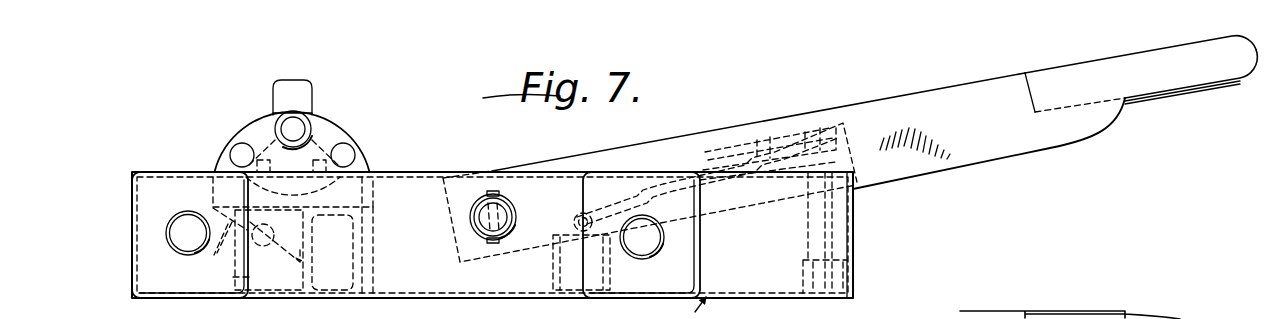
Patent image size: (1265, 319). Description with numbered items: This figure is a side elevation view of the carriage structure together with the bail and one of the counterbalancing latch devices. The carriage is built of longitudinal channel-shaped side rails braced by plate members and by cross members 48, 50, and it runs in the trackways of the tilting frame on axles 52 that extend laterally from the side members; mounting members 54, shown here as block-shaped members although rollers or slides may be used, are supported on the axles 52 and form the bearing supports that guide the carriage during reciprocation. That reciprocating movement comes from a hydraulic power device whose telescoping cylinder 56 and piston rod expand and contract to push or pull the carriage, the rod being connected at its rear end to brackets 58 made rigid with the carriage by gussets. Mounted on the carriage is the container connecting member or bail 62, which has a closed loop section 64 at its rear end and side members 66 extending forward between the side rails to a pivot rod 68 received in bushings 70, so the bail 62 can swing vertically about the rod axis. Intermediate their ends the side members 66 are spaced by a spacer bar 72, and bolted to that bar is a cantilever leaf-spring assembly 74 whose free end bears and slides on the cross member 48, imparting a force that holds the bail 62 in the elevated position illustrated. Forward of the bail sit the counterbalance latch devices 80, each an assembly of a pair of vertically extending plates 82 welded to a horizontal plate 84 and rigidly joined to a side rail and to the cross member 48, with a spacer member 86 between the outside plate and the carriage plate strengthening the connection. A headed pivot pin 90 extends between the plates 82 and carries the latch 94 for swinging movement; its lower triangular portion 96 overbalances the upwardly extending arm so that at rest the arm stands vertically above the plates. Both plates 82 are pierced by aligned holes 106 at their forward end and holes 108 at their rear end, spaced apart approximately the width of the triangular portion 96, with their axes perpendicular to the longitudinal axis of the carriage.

The cross member 48 is at (788, 283).
The cross member 50 is at (277, 254).
The axle 52 is at (184, 216).
The mounting member 54 is at (140, 253).
The telescoping cylinder 56 is at (853, 230).
The bracket 58 is at (233, 277).
The bail 62 is at (1050, 152).
The loop section 64 is at (1238, 82).
The bail side member 66 is at (973, 150).
The pivot rod 68 is at (488, 220).
The bushing 70 is at (470, 212).
The spacer bar 72 is at (846, 122).
The leaf-spring assembly 74 is at (727, 190).
The counterbalance latch device 80 is at (376, 129).
The vertically extending plate 82 is at (347, 133).
The horizontal plate 84 is at (371, 209).
The spacer member 86 is at (220, 247).
The pivot pin 90 is at (296, 127).
The latch 94 is at (272, 102).
The triangular portion 96 is at (285, 79).
The hole 106 is at (233, 154).
The hole 108 is at (354, 153).